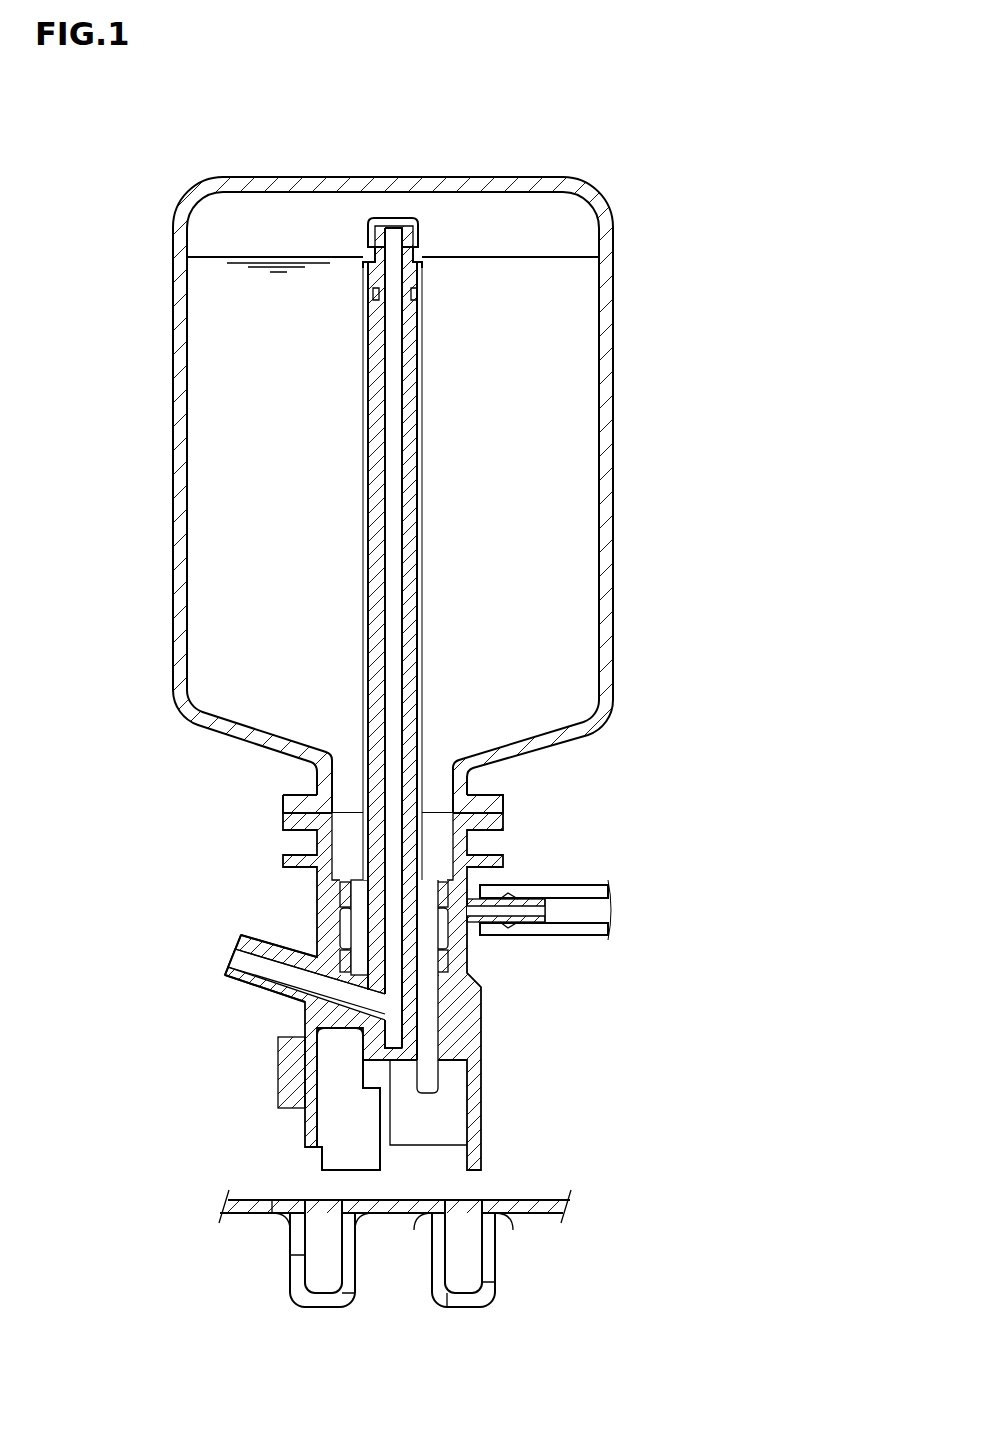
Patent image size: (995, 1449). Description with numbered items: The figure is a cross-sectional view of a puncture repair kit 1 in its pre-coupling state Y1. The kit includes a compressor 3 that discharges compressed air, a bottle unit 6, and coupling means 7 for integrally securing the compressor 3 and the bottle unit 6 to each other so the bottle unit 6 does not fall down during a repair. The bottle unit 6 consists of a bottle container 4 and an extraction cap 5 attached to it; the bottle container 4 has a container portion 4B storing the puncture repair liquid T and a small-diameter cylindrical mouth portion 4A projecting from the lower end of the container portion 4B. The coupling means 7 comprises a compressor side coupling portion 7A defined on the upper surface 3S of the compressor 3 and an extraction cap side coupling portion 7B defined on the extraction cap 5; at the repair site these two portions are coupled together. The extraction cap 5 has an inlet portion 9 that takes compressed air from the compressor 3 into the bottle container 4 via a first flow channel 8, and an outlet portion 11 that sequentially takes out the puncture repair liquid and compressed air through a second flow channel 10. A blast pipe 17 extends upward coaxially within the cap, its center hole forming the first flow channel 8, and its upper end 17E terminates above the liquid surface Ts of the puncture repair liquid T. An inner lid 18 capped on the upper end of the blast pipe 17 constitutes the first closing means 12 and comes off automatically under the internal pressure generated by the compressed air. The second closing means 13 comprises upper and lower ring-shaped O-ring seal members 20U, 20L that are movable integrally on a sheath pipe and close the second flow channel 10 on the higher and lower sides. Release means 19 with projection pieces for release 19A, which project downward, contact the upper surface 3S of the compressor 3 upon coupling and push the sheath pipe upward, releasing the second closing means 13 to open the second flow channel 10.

The puncture repair kit 1 is at (445, 698).
The compressor 3 is at (528, 1200).
The upper surface 3S is at (447, 1188).
The bottle container 4 is at (478, 495).
The mouth portion 4A is at (555, 770).
The container portion 4B is at (613, 550).
The extraction cap 5 is at (470, 967).
The bottle unit 6 is at (488, 673).
The coupling means 7 is at (283, 1167).
The compressor side coupling portion 7A is at (271, 1263).
The extraction cap side coupling portion 7B is at (262, 1085).
The first flow channel 8 is at (260, 568).
The inlet portion 9 is at (275, 945).
The second flow channel 10 is at (527, 887).
The outlet portion 11 is at (594, 918).
The first closing means 12 is at (360, 183).
The second closing means 13 is at (481, 950).
The blast pipe 17 is at (253, 574).
The upper end 17E is at (393, 226).
The inner lid 18 is at (367, 227).
The release means 19 is at (512, 991).
The projection pieces for release 19A is at (443, 1075).
The upper seal member 20U is at (448, 904).
The lower seal member 20L is at (450, 966).
The puncture repair liquid T is at (560, 362).
The liquid surface Ts is at (563, 255).
The pre-coupling state Y1 is at (541, 1052).